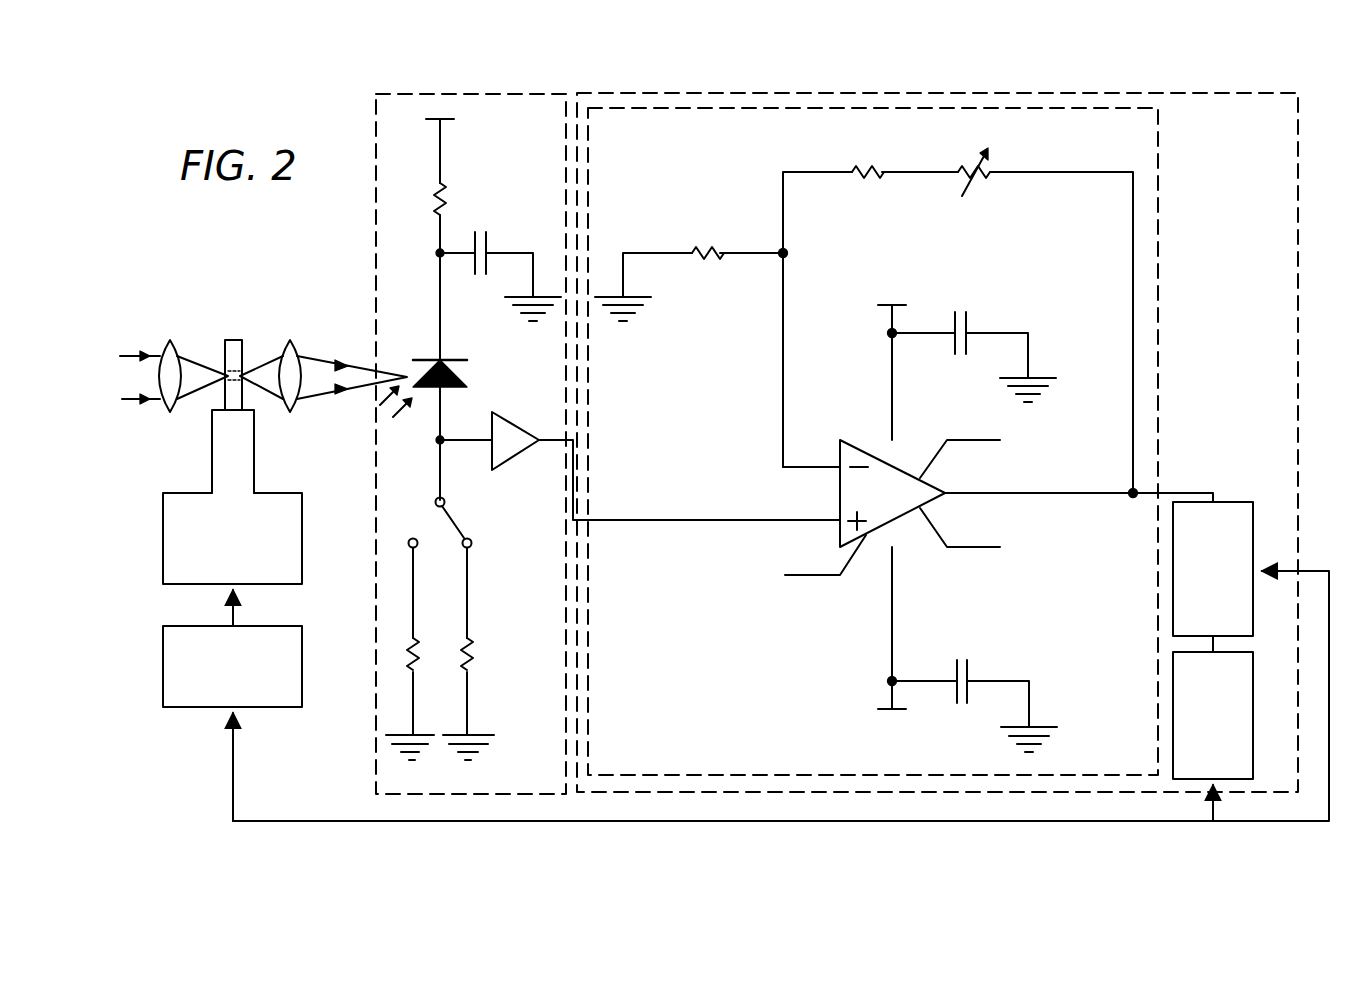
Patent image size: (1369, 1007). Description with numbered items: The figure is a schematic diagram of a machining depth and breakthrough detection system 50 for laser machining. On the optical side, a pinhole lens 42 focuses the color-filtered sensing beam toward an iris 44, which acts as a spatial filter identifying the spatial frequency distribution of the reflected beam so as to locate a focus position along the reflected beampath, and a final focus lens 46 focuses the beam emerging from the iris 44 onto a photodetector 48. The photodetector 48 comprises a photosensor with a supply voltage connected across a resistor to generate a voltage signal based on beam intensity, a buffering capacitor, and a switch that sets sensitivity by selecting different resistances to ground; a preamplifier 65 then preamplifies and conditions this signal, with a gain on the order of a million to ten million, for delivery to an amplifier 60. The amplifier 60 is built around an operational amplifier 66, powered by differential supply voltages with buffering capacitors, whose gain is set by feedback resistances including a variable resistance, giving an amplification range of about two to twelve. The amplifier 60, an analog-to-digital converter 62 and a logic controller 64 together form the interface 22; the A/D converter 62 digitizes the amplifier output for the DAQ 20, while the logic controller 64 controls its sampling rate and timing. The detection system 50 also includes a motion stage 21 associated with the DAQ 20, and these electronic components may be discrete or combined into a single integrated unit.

The DAQ 20 is at (163, 648).
The motion stage 21 is at (163, 517).
The interface 22 is at (1298, 195).
The pinhole lens 42 is at (172, 340).
The iris 44 is at (232, 340).
The final focus lens 46 is at (292, 340).
The photodetector 48 is at (608, 417).
The machining depth and breakthrough detection system 50 is at (937, 411).
The amplifier 60 is at (900, 441).
The analog-to-digital (A/D) converter 62 is at (1253, 540).
The logic controller (LC) 64 is at (1253, 687).
The preamplifier (PA) 65 is at (521, 416).
The operational amplifier (op amp) 66 is at (859, 448).